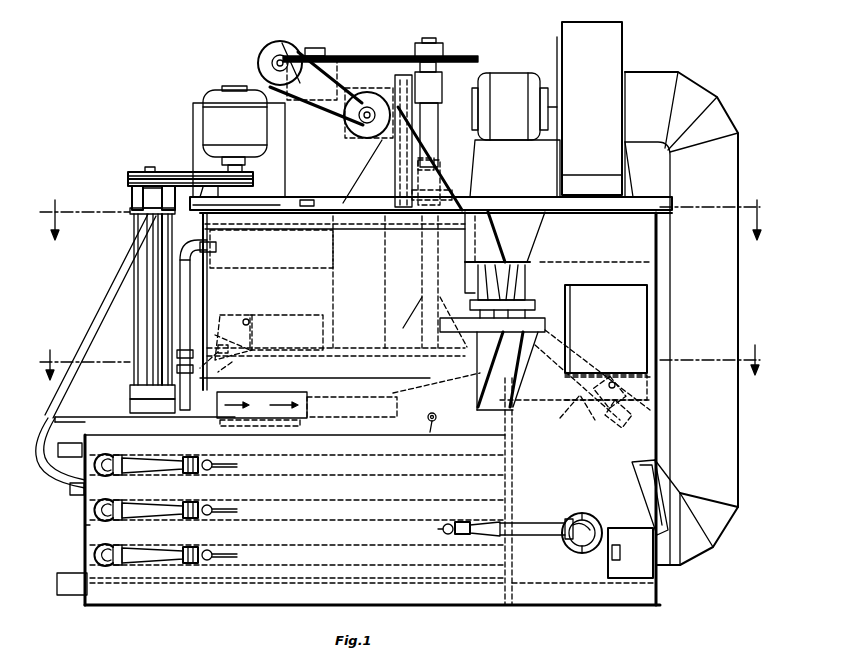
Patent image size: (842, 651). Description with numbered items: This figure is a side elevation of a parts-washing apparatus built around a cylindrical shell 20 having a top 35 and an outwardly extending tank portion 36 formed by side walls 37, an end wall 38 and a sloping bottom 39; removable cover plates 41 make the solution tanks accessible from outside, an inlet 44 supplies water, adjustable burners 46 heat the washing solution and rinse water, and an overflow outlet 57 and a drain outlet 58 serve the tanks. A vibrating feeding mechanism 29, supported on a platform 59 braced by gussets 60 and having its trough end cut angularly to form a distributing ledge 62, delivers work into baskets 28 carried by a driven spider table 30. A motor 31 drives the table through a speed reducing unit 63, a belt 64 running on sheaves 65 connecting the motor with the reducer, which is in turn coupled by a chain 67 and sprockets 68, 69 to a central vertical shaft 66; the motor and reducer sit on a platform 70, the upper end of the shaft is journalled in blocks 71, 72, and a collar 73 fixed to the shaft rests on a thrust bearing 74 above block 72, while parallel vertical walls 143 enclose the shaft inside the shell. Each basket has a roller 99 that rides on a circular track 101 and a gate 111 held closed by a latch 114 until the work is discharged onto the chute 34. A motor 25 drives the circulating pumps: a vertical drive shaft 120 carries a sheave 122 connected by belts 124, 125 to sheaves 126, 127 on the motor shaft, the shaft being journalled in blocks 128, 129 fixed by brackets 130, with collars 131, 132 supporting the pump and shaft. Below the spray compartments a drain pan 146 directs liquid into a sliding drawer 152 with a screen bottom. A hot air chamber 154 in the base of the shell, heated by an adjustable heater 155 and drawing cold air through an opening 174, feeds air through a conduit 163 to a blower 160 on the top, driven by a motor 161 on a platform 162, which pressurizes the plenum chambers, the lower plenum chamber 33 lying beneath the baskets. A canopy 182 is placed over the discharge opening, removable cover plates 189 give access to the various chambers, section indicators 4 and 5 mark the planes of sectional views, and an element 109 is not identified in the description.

The section line 4- 4 is at (403, 220).
The section line 5- 5 is at (401, 356).
The cylindrical shell 20 is at (640, 272).
The motor 25 is at (218, 95).
The work-carrying baskets 28 is at (278, 335).
The vibrating feeding mechanism 29 is at (518, 243).
The spider table 30 is at (380, 356).
The motor 31 is at (367, 92).
The plenum chamber 33 is at (147, 336).
The chute 34 is at (672, 495).
The top 35 is at (570, 205).
The tank portion 36 is at (85, 432).
The side walls 37 is at (297, 498).
The end wall 38 is at (85, 525).
The sloping bottom 39 is at (255, 588).
The removable cover plates 41 is at (75, 416).
The inlet 44 is at (431, 430).
The adjustable burners 46 is at (225, 558).
The overflow outlet 57 is at (69, 469).
The drain outlet 58 is at (58, 577).
The platform 59 is at (535, 325).
The gussets 60 is at (500, 385).
The distributing ledge 62 is at (312, 80).
The speed reducing unit 63 is at (345, 112).
The belt 64 is at (352, 132).
The sheaves 65 is at (268, 50).
The central vertical shaft 66 is at (430, 120).
The chain 67 is at (380, 50).
The sprocket 68 is at (322, 50).
The sprocket 69 is at (443, 50).
The platform 70 is at (295, 170).
The block 71 is at (442, 88).
The block 72 is at (429, 141).
The collar 73 is at (440, 160).
The thrust bearing 74 is at (438, 166).
The roller 99 is at (618, 423).
The circular track 101 is at (232, 365).
The box 109 is at (610, 289).
The gate 111 is at (240, 318).
The latch 114 is at (650, 382).
The vertical drive shaft 120 is at (152, 283).
The sheave 122 is at (130, 178).
The belt 124 is at (168, 172).
The belt 125 is at (236, 199).
The sheave 126 is at (228, 168).
The sheave 127 is at (245, 184).
The block 128 is at (137, 401).
The block 129 is at (148, 195).
The brackets 130 is at (135, 210).
The collar 131 is at (140, 222).
The collar 132 is at (133, 388).
The parallel vertical walls 143 is at (333, 243).
The drain pan 146 is at (445, 380).
The sliding drawer 152 is at (260, 414).
The hot air chamber 154 is at (574, 578).
The adjustable heater 155 is at (545, 525).
The blower 160 is at (602, 38).
The motor 161 is at (506, 80).
The platform 162 is at (515, 168).
The conduit 163 is at (722, 155).
The opening 174 is at (590, 520).
The canopy 182 is at (316, 205).
The removable cover plates 189 is at (645, 568).